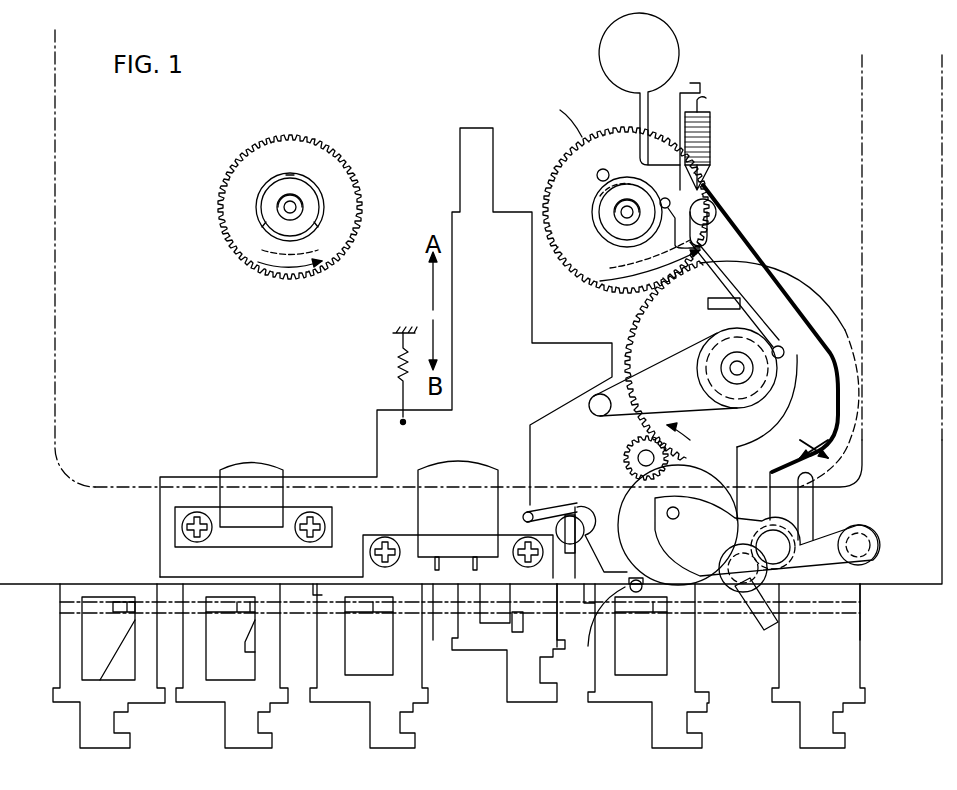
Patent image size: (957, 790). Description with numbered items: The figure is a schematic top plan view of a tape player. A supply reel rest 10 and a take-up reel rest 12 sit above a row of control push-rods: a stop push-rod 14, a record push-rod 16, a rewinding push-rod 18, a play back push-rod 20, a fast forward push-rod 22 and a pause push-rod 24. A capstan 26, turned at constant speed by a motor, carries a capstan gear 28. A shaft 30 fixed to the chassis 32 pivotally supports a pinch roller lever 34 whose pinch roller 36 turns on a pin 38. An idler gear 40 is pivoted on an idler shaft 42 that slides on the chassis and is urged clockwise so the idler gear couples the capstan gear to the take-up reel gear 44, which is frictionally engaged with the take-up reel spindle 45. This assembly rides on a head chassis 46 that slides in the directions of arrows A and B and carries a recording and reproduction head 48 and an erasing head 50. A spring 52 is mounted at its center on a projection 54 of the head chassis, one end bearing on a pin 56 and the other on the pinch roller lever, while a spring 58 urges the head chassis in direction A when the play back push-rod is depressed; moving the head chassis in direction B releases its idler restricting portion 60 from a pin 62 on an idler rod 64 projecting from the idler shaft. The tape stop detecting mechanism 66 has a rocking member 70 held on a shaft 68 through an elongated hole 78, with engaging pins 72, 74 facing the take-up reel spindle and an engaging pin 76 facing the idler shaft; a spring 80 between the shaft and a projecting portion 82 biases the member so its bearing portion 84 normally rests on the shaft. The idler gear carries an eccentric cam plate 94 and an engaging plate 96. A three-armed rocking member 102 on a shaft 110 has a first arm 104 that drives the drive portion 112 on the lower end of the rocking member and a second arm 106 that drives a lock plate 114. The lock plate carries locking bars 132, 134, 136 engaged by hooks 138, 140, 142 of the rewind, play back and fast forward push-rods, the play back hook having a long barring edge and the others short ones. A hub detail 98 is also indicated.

The supply reel rest 10 is at (338, 163).
The take-up reel rest 12 is at (559, 111).
The stop push-rod 14 is at (141, 695).
The record push-rod 16 is at (263, 700).
The rewinding push-rod 18 is at (410, 700).
The play back push-rod 20 is at (490, 648).
The fast forward push-rod 22 is at (620, 693).
The pause push-rod 24 is at (855, 655).
The capstan 26 is at (617, 478).
The capstan gear 28 is at (639, 446).
The shaft 30 is at (880, 565).
The chassis 32 is at (922, 467).
The pinch roller lever 34 is at (860, 598).
The pinch roller 36 is at (693, 473).
The pin 38 is at (620, 592).
The idler gear 40 is at (632, 327).
The idler shaft 42 is at (728, 360).
The take-up reel gear 44 is at (578, 158).
The take-up reel spindle 45 is at (608, 232).
The head chassis 46 is at (385, 425).
The recording and reproduction head 48 is at (456, 468).
The erasing head 50 is at (262, 475).
The spring 52 is at (600, 562).
The projection 54 is at (574, 528).
The pin 56 is at (532, 506).
The spring 58 is at (395, 363).
The idler restricting portion 60 is at (588, 358).
The pin 62 is at (598, 413).
The idler rod 64 is at (663, 389).
The tape stop detecting mechanism 66 is at (786, 226).
The shaft 68 is at (717, 212).
The rocking member 70 is at (755, 259).
The engaging pin 72 is at (665, 196).
The engaging pin 74 is at (607, 172).
The engaging pin 76 is at (780, 350).
The elongated hole 78 is at (708, 232).
The spring 80 is at (712, 140).
The projecting portion 82 is at (673, 80).
The bearing portion 84 is at (718, 196).
The cam plate 94 is at (757, 403).
The engaging plate 96 is at (708, 305).
The hub slot 98 is at (600, 200).
The rocking member 102 is at (648, 594).
The first arm 104 is at (817, 521).
The second arm 106 is at (786, 608).
The shaft 110 is at (716, 590).
The drive portion 112 is at (762, 507).
The lock plate 114 is at (435, 612).
The locking bar 132 is at (383, 612).
The locking bar 134 is at (517, 613).
The locking bar 136 is at (660, 612).
The hook 138 is at (388, 642).
The hook 140 is at (560, 605).
The hook 142 is at (653, 653).